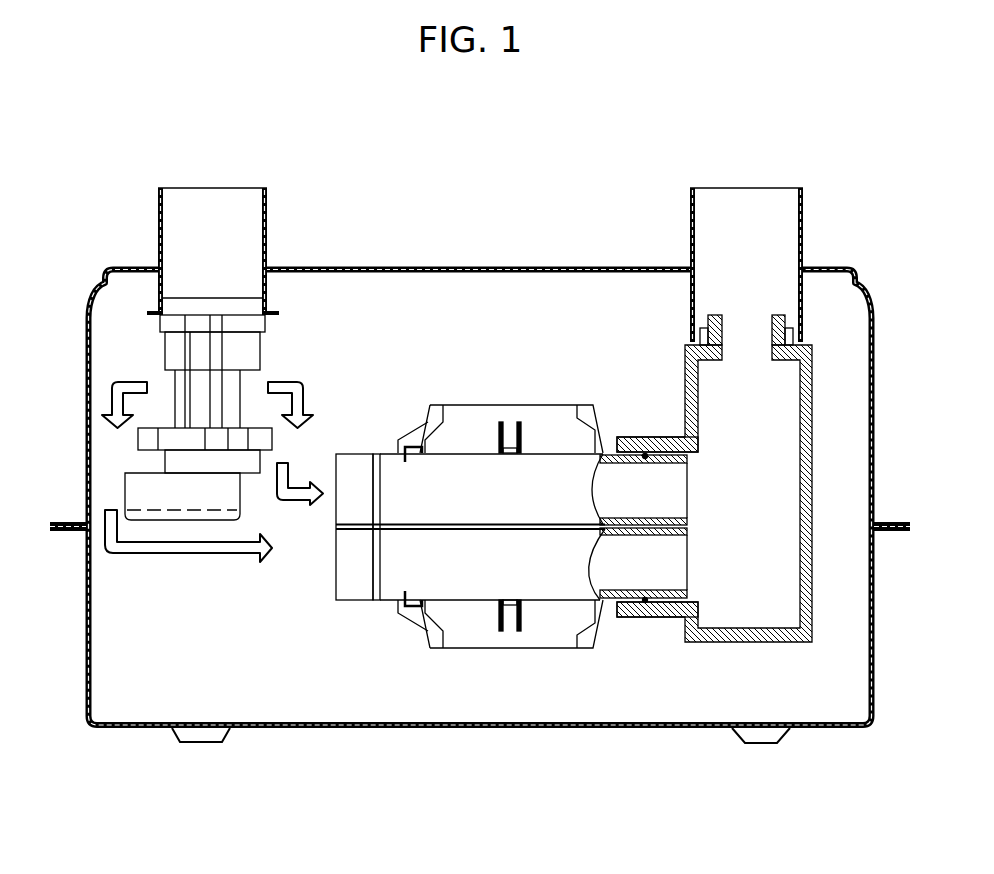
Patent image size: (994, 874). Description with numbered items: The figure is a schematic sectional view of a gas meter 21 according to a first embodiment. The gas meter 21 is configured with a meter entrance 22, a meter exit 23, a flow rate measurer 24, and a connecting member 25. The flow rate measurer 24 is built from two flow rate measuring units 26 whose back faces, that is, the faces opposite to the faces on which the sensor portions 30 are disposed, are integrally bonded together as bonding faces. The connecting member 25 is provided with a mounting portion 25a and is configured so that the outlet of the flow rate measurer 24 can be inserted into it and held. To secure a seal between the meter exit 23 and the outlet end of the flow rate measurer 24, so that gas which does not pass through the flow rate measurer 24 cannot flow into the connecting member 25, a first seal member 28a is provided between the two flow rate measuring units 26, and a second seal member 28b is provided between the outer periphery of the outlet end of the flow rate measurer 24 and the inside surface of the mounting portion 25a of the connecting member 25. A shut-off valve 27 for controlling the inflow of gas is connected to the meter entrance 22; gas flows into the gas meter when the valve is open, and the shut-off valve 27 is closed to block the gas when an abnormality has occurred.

The gas meter 21 is at (485, 262).
The meter entrance 22 is at (160, 227).
The meter exit 23 is at (803, 212).
The flow rate measurer 24 is at (451, 520).
The connecting member 25 is at (714, 563).
The mounting portion 25a is at (660, 603).
The flow rate measuring unit 26 is at (420, 500).
The shut-off valve 27 is at (195, 488).
The first seal member 28a is at (635, 533).
The second seal member 28b is at (645, 601).
The sensor portion 30 is at (537, 428).